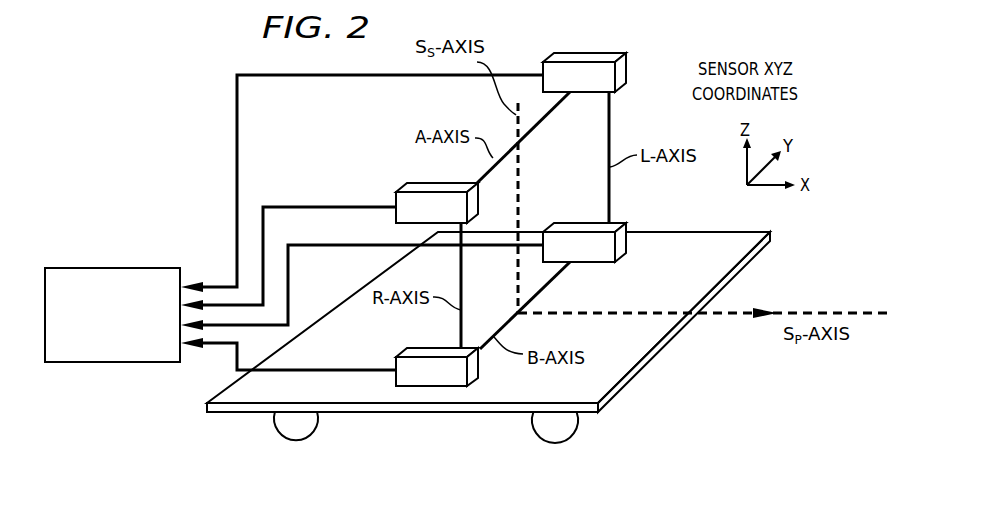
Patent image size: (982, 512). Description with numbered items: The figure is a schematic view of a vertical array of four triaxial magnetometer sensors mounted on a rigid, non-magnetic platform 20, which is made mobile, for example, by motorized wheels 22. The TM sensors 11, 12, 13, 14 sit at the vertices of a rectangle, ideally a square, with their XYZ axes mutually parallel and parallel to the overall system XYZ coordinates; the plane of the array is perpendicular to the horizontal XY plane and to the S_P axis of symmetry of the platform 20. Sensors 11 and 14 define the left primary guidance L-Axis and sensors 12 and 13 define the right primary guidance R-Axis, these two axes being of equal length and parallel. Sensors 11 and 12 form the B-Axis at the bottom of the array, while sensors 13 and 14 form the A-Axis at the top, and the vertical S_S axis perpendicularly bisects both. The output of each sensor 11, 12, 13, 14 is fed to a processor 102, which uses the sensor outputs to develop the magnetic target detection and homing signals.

The processor 102 is at (108, 268).
The TM sensor 14 is at (626, 72).
The TM sensor 13 is at (412, 185).
The TM sensor 11 is at (627, 225).
The TM sensor 12 is at (410, 349).
The platform 20 is at (232, 412).
The wheels 22 is at (290, 442).